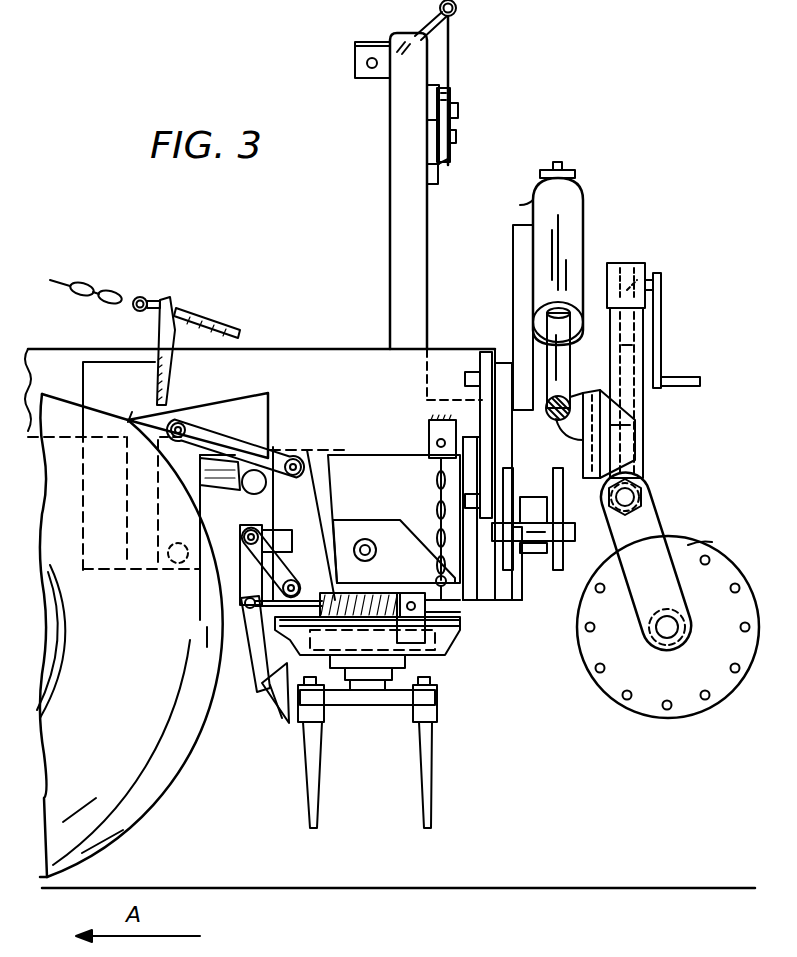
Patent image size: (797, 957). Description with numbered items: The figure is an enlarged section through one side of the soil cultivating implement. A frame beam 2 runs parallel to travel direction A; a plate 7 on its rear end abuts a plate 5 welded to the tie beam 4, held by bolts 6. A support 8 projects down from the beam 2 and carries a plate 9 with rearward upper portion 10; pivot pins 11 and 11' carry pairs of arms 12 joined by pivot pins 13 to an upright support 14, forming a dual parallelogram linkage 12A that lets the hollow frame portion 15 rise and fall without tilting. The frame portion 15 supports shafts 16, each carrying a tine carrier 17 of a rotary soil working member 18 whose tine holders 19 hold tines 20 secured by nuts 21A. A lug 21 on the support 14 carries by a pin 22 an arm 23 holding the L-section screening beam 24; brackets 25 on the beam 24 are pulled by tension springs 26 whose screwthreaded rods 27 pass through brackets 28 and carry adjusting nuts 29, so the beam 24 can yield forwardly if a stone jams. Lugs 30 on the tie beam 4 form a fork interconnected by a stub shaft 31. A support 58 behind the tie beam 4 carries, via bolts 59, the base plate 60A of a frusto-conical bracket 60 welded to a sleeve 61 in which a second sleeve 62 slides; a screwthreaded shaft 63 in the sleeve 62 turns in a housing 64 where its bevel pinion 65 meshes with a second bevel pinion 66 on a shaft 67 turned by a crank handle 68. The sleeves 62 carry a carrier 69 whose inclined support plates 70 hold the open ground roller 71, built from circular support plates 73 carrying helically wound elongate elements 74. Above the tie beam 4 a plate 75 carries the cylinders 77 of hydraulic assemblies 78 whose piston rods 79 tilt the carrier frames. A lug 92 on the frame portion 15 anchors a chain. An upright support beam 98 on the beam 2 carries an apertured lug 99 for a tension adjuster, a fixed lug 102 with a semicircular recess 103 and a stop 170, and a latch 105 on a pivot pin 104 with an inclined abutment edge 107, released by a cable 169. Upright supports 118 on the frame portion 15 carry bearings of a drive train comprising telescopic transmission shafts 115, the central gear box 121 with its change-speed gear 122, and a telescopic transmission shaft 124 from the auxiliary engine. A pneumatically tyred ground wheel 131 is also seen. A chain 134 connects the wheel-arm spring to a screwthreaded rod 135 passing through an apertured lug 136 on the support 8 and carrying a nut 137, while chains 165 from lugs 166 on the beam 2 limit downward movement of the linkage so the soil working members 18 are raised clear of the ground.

The frame beam 2 is at (270, 349).
The tie beam 4 is at (513, 262).
The plate 5 is at (504, 437).
The bolts 6 is at (465, 380).
The plate 7 is at (480, 366).
The support 8 is at (98, 362).
The plate 9 is at (132, 412).
The upper portion 10 is at (238, 400).
The pivot pins 11 is at (186, 402).
The pivot pin 11' is at (162, 567).
The arms 12 is at (243, 427).
The dual parallelogram linkage 12A is at (282, 432).
The pivot pins 13 is at (301, 460).
The upright support 14 is at (320, 500).
The hollow box-section frame portion 15 is at (250, 648).
The shafts 16 is at (376, 700).
The tine support or carrier 17 is at (355, 700).
The rotary soil working member 18 is at (298, 770).
The tine holders 19 is at (297, 718).
The soil working tines 20 is at (422, 762).
The lug 21 is at (318, 492).
The nuts 21A is at (436, 686).
The pin 22 is at (250, 526).
The arm 23 is at (258, 560).
The beam 24 is at (262, 700).
The brackets 25 is at (250, 620).
The tension springs 26 is at (374, 593).
The screwthreaded rods 27 is at (445, 604).
The brackets 28 is at (445, 632).
The nut 29 is at (448, 622).
The lugs 30 is at (510, 482).
The stub shaft 31 is at (578, 528).
The supports 58 is at (568, 397).
The bolts 59 is at (565, 432).
The frusto-conical bracket 60 is at (640, 442).
The base plate 60A is at (635, 428).
The sleeve 61 is at (645, 468).
The second sleeve 62 is at (645, 488).
The screwthreaded shaft 63 is at (661, 322).
The housing 64 is at (612, 263).
The bevel pinion 65 is at (636, 263).
The second bevel pinion 66 is at (650, 268).
The shaft 67 is at (661, 294).
The crank handle 68 is at (661, 364).
The carrier 69 is at (643, 508).
The support plates 70 is at (642, 604).
The ground roller 71 is at (680, 722).
The circular support plates 73 is at (698, 546).
The elongate elements 74 is at (622, 700).
The plate 75 is at (560, 162).
The cylinders 77 is at (513, 199).
The double-acting hydraulic piston and cylinder assemblies 78 is at (588, 212).
The piston rod 79 is at (547, 340).
The lug 92 is at (412, 593).
The upright support beam 98 is at (392, 222).
The apertured lug 99 is at (355, 64).
The lug 102 is at (427, 102).
The semicircular recess 103 is at (427, 135).
The pivot pin 104 is at (458, 110).
The latch 105 is at (452, 95).
The inclined abutment edge 107 is at (455, 163).
The telescopic transmission shafts 115 is at (368, 540).
The upright supports 118 is at (392, 528).
The central gear box 121 is at (332, 452).
The change-speed gear 122 is at (488, 604).
The telescopic transmission shaft 124 is at (200, 468).
The ground wheels 131 is at (150, 796).
The chain 134 is at (92, 276).
The screwthreaded rod 135 is at (143, 296).
The apertured lug 136 is at (178, 300).
The nut 137 is at (190, 304).
The chains 165 is at (438, 456).
The lugs 166 is at (437, 420).
The cables 169 is at (452, 42).
The stops 170 is at (456, 137).